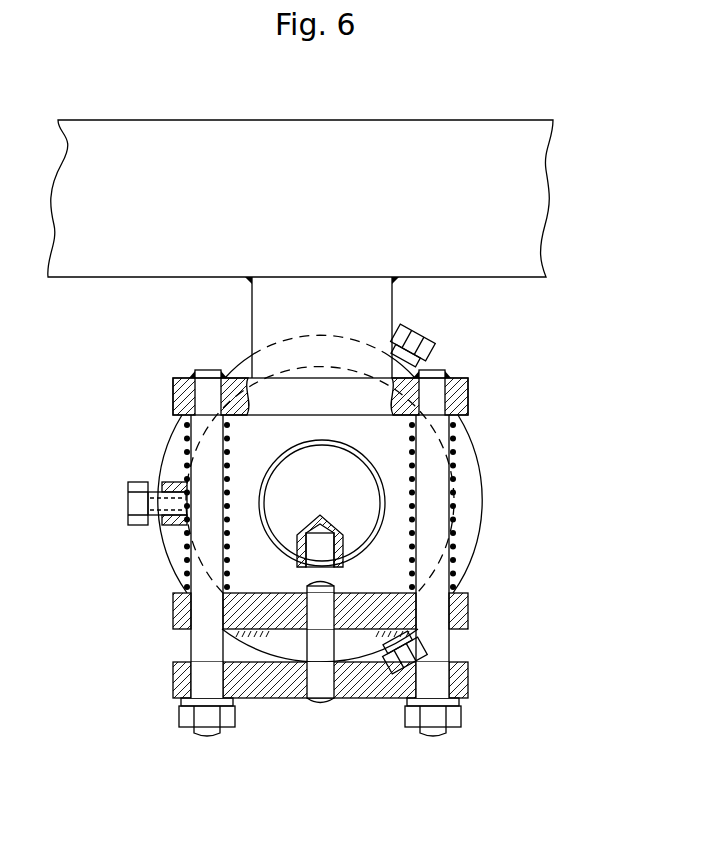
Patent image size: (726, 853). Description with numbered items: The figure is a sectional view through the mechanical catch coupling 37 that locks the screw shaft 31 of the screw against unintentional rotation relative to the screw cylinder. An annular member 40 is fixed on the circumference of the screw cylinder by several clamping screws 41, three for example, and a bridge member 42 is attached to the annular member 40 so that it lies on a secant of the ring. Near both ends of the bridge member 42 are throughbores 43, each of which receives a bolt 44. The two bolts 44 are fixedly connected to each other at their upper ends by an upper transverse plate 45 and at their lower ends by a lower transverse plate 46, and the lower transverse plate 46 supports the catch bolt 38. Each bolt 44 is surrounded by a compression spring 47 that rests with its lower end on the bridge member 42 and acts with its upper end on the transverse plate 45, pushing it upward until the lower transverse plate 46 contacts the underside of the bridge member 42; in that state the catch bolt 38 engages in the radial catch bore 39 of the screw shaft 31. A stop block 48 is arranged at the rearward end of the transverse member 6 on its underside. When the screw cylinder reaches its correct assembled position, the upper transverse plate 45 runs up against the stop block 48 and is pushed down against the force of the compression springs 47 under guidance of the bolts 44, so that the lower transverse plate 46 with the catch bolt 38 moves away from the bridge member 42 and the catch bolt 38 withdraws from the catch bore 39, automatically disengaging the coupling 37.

The transverse member 6 is at (525, 196).
The screw shaft 31 is at (360, 487).
The mechanical catch coupling 37 is at (318, 590).
The catch bolt 38 is at (320, 670).
The radial catch bore 39 is at (325, 540).
The annular member 40 is at (172, 537).
The clamping screws 41 is at (418, 338).
The bridge member 42 is at (375, 594).
The throughbores 43 is at (175, 607).
The bolts 44 is at (200, 634).
The upper transverse plate 45 is at (288, 393).
The lower transverse plate 46 is at (263, 685).
The compression spring 47 is at (185, 440).
The stop block 48 is at (373, 318).